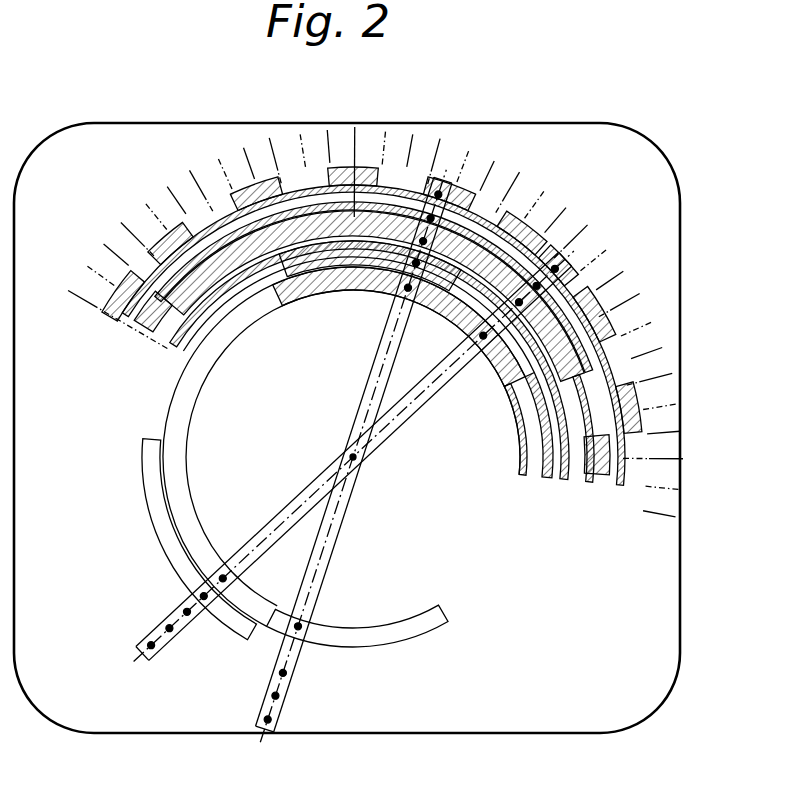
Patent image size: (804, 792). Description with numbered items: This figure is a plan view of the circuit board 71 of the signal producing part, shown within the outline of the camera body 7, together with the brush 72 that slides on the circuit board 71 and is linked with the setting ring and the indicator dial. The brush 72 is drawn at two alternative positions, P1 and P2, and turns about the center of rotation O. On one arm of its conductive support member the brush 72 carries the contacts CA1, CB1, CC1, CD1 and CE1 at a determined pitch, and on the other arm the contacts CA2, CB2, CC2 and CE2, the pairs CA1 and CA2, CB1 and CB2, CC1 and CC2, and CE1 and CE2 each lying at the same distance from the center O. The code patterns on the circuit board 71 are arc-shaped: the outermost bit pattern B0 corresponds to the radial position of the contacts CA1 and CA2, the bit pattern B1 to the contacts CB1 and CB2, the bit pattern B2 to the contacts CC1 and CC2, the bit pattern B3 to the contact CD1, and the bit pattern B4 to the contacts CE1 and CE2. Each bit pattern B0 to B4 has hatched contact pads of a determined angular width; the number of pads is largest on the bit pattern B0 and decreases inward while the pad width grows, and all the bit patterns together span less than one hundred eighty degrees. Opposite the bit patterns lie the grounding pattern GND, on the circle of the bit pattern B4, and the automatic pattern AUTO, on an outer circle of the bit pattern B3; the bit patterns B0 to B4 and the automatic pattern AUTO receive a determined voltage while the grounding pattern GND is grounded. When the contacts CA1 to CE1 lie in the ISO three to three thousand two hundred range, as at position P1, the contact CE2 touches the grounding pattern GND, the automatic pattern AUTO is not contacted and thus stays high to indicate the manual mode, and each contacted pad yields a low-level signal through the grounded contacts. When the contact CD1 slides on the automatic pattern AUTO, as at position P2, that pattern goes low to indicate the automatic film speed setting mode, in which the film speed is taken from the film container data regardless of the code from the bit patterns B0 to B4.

The housing 7 is at (108, 742).
The circuit board 71 is at (158, 125).
The brush 72 is at (342, 466).
The center of rotation O is at (356, 462).
The position P1 is at (351, 466).
The position P2 is at (363, 540).
The automatic pattern AUTO is at (154, 530).
The grounding pattern GND is at (432, 622).
The contact CA1 is at (445, 190).
The contact CB1 is at (430, 217).
The contact CC1 is at (421, 242).
The contact CD1 is at (417, 264).
The contact CE1 is at (407, 290).
The contact CA2 is at (556, 270).
The contact CB2 is at (537, 286).
The contact CC2 is at (519, 302).
The contact CE2 is at (483, 336).
The outermost bit pattern B0 is at (616, 483).
The bit pattern B1 is at (595, 482).
The bit pattern B2 is at (568, 482).
The bit pattern B3 is at (548, 482).
The bit pattern B4 is at (521, 480).